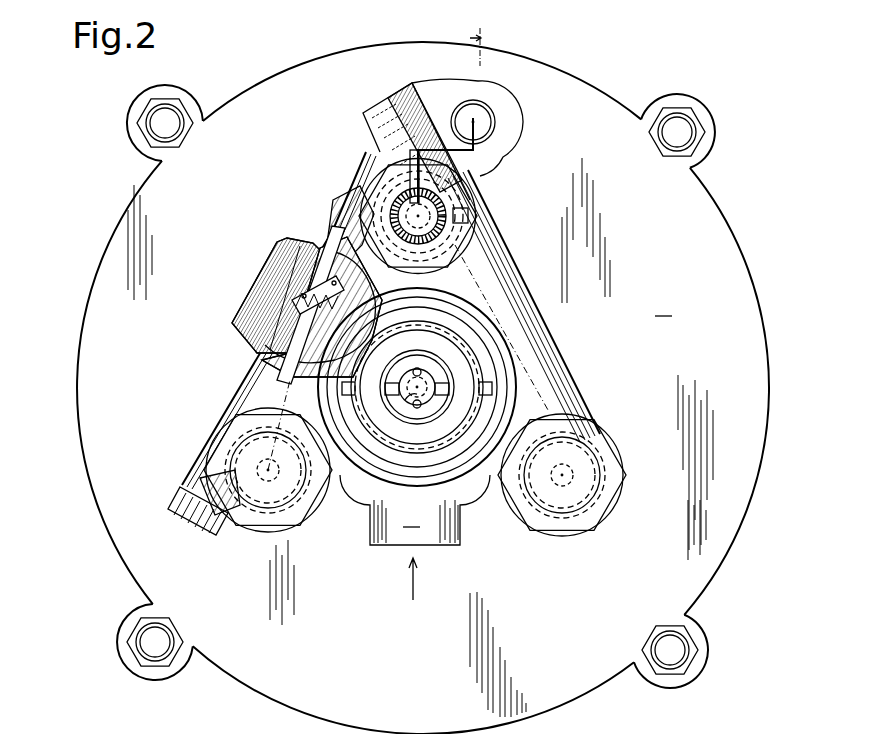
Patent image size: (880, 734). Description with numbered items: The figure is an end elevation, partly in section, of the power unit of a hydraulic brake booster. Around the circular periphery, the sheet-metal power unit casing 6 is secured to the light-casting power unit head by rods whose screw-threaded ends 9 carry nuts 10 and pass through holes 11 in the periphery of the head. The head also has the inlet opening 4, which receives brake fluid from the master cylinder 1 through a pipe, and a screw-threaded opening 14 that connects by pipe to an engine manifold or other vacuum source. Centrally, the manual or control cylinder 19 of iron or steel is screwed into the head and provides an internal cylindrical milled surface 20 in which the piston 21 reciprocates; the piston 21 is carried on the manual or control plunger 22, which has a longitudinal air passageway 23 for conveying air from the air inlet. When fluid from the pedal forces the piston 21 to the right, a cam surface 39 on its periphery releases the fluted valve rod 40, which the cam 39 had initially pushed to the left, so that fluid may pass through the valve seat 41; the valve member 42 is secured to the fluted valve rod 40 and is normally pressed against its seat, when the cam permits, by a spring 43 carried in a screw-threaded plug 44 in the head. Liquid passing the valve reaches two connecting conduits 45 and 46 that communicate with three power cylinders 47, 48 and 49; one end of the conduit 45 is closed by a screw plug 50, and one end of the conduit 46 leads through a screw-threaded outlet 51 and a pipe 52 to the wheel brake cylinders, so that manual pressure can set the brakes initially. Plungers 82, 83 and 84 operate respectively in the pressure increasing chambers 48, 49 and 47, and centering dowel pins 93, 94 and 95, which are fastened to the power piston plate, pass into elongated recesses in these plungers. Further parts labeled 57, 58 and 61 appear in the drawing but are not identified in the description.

The master cylinder 1 is at (483, 47).
The inlet opening 4 is at (415, 537).
The power unit casing 6 is at (733, 240).
The screw-threaded ends 9 is at (150, 640).
The nuts 10 is at (140, 662).
The holes 11 is at (160, 668).
The screw-threaded opening 14 is at (487, 118).
The manual or control cylinder 19 is at (480, 350).
The internal cylindrical milled surface 20 is at (465, 372).
The piston 21 is at (470, 340).
The manual or control plunger 22 is at (416, 407).
The longitudinal air passageway 23 is at (417, 367).
The cam surface 39 is at (443, 305).
The fluted valve rod 40 is at (392, 301).
The valve seat 41 is at (306, 348).
The valve member 42 is at (327, 282).
The spring 43 is at (262, 340).
The screw-threaded plug 44 is at (262, 272).
The connecting conduit 45 is at (352, 225).
The connecting conduit 46 is at (490, 243).
The power cylinder 47 is at (263, 512).
The power cylinder 48 is at (470, 190).
The power cylinder 49 is at (598, 462).
The screw plug 50 is at (205, 522).
The screw-threaded outlet 51 is at (397, 198).
The pipe 52 is at (421, 100).
The screw 57 is at (430, 401).
The hub 58 is at (400, 381).
The screw 61 is at (392, 414).
The plunger 82 is at (470, 212).
The plunger 83 is at (592, 490).
The plunger 84 is at (290, 515).
The centering dowel pin 93 is at (473, 228).
The centering dowel pin 94 is at (565, 474).
The centering dowel pin 95 is at (268, 470).